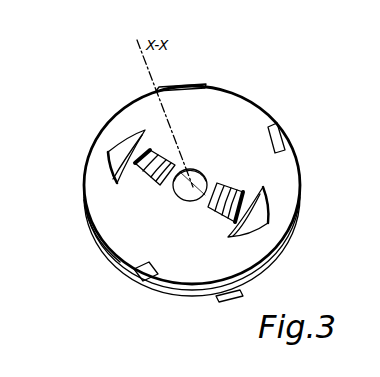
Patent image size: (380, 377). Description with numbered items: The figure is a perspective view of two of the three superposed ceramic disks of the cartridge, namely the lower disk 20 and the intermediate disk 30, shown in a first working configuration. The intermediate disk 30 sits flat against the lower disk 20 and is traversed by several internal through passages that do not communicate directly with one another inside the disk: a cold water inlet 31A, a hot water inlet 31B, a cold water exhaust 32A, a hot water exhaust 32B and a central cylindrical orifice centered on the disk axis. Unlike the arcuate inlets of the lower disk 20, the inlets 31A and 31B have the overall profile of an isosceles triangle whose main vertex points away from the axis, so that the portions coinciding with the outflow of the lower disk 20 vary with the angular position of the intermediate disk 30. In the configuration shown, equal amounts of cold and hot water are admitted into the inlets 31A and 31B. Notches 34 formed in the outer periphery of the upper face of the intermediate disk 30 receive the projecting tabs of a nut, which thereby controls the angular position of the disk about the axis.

The lower disk 20 is at (159, 295).
The intermediate disk 30 is at (98, 137).
The cold water inlet 31A is at (125, 138).
The hot water inlet 31B is at (268, 204).
The cold water exhaust 32A is at (160, 187).
The hot water exhaust 32B is at (238, 183).
The notches 34 is at (164, 92).